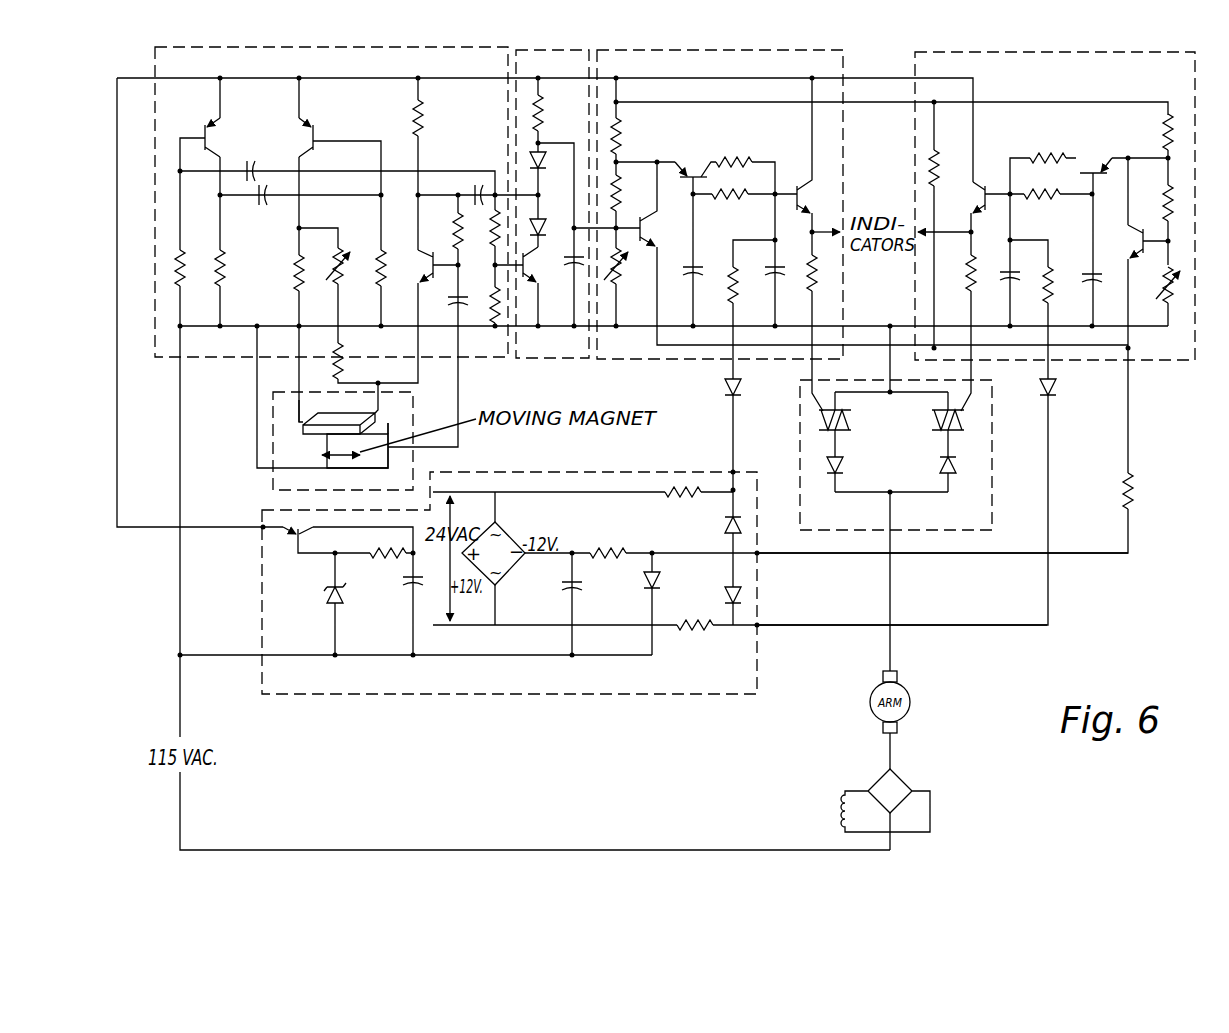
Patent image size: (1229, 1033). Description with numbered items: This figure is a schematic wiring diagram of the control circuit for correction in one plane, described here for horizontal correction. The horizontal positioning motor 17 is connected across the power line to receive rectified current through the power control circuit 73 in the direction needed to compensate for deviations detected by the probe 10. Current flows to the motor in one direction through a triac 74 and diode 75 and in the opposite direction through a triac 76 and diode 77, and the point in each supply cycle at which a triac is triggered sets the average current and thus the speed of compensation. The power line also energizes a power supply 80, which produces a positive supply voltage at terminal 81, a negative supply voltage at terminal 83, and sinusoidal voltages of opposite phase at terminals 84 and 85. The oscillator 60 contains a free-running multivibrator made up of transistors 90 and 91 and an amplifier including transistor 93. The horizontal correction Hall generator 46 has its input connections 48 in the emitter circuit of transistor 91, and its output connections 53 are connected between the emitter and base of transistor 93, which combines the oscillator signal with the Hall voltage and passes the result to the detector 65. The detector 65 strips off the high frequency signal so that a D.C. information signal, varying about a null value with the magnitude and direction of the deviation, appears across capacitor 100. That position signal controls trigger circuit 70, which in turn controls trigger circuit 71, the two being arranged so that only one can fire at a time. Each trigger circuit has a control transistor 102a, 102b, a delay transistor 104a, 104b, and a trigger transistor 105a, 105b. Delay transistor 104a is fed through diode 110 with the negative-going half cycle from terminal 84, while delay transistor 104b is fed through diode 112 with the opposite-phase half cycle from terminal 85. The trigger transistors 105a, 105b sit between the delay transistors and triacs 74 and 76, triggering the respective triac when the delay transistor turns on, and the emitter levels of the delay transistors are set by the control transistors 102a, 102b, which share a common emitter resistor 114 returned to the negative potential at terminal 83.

The probe 10 is at (413, 432).
The horizontal positioning motor 17 is at (904, 778).
The horizontal correction Hall generator 46 is at (327, 432).
The input connections 48 is at (298, 403).
The output connections 53 is at (356, 411).
The oscillator 60 is at (383, 63).
The detector 65 is at (553, 357).
The trigger circuit 70 is at (816, 58).
The trigger circuit 71 is at (977, 63).
The power control circuit 73 is at (992, 491).
The triac 74 is at (850, 421).
The diode 75 is at (845, 465).
The triac 76 is at (931, 420).
The diode 77 is at (941, 465).
The power supply 80 is at (757, 680).
The terminal 81 is at (262, 525).
The terminal 83 is at (759, 555).
The terminal 84 is at (736, 470).
The terminal 85 is at (760, 623).
The transistor 90 is at (210, 133).
The transistor 91 is at (286, 130).
The transistor 93 is at (436, 256).
The capacitor 100 is at (574, 260).
The control transistor 102a is at (651, 239).
The control transistor 102b is at (1140, 246).
The delay transistor 104a is at (688, 168).
The delay transistor 104b is at (1090, 170).
The trigger transistor 105a is at (796, 186).
The trigger transistor 105b is at (984, 185).
The diode 110 is at (741, 387).
The diode 112 is at (1056, 386).
The common emitter resistor 114 is at (1134, 492).